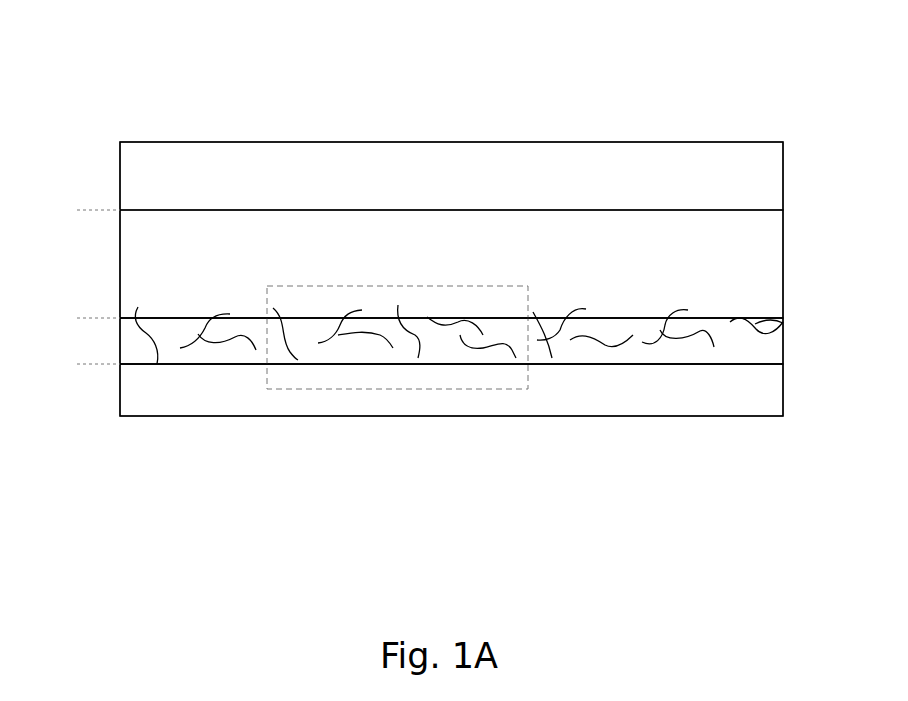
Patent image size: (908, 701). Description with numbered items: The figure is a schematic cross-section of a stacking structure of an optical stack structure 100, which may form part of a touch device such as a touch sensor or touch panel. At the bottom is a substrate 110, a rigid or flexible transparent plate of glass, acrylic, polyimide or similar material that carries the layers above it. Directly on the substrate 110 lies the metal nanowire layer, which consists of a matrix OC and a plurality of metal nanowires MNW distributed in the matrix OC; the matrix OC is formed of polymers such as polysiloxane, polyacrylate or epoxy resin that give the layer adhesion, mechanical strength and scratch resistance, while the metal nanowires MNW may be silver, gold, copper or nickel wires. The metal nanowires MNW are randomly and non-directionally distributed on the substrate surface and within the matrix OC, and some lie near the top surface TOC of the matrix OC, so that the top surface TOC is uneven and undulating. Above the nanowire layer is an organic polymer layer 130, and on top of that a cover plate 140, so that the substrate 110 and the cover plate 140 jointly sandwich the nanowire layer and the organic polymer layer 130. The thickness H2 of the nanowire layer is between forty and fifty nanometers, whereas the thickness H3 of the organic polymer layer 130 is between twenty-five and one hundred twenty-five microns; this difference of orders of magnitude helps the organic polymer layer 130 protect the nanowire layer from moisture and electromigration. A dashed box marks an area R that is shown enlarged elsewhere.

The optical stack structure 100 is at (876, 52).
The cover plate 140 is at (777, 178).
The organic polymer layer 130 is at (777, 246).
The substrate 110 is at (777, 391).
The metal nanowires MNW is at (783, 322).
The matrix OC is at (883, 305).
The area R is at (383, 286).
The top surface of the matrix TOC is at (637, 337).
The thickness of the organic polymer layer H3 is at (85, 212).
The thickness of the metal nanowire layer H2 is at (85, 320).